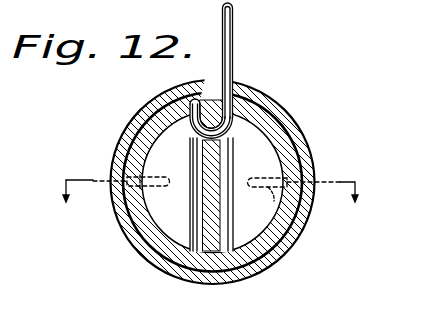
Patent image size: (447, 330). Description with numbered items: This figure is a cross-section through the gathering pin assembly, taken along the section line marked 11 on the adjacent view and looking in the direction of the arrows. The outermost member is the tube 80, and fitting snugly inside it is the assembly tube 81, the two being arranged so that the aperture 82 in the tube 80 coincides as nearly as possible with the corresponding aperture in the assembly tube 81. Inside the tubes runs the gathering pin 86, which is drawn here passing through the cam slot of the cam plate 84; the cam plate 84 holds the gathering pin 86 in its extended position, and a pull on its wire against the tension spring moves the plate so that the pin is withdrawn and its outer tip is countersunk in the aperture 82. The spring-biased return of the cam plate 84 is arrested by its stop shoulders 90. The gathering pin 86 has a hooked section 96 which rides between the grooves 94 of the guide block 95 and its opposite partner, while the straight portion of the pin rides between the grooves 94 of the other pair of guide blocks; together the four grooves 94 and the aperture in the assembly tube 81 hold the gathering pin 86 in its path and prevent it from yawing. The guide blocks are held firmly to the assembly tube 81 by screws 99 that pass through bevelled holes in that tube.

The tube 80 is at (221, 151).
The assembly tube 81 is at (316, 168).
The aperture 82 is at (232, 93).
The cam plate 84 is at (231, 141).
The gathering pin 86 is at (227, 40).
The stop shoulders 90 is at (191, 121).
The grooves 94 is at (186, 281).
The guide block 95 is at (189, 146).
The guide block 96 is at (294, 236).
The screws 99 is at (122, 202).
The section line 11- 11 is at (80, 173).